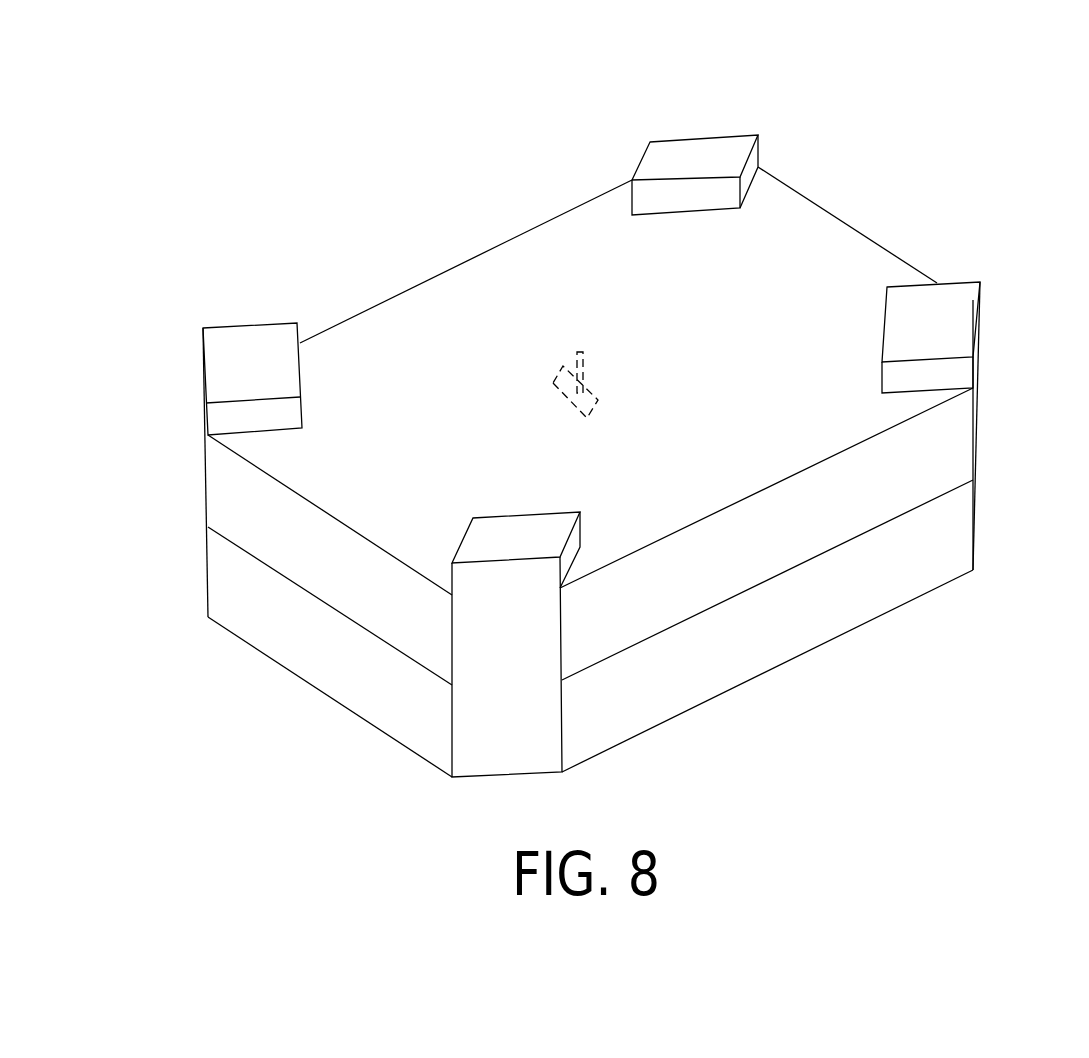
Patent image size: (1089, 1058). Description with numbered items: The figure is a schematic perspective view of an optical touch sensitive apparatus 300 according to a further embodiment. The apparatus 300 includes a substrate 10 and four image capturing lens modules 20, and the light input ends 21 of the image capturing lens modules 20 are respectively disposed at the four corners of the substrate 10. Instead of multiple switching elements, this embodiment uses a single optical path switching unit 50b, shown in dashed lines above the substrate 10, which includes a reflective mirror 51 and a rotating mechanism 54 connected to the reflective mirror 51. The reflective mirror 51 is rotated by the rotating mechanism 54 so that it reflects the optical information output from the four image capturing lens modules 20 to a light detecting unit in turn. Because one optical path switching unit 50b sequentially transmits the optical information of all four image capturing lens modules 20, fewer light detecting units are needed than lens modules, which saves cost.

The optical touch sensitive apparatus 300 is at (150, 167).
The substrate 10 is at (947, 433).
The image capturing lens module 20 is at (700, 148).
The light input end 21 is at (698, 203).
The optical path switching unit 50b is at (523, 133).
The reflective mirror 51 is at (552, 383).
The rotating mechanism 54 is at (579, 354).